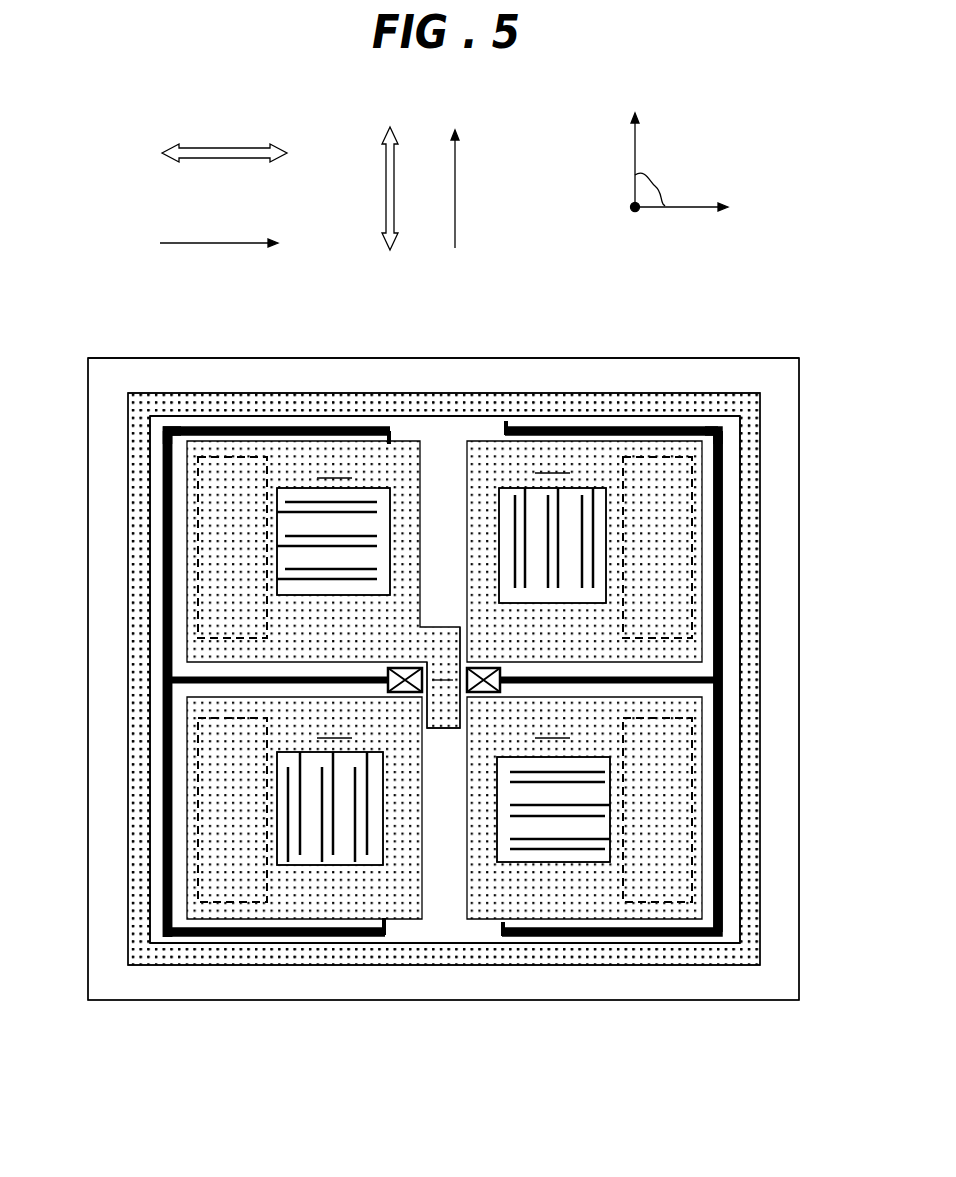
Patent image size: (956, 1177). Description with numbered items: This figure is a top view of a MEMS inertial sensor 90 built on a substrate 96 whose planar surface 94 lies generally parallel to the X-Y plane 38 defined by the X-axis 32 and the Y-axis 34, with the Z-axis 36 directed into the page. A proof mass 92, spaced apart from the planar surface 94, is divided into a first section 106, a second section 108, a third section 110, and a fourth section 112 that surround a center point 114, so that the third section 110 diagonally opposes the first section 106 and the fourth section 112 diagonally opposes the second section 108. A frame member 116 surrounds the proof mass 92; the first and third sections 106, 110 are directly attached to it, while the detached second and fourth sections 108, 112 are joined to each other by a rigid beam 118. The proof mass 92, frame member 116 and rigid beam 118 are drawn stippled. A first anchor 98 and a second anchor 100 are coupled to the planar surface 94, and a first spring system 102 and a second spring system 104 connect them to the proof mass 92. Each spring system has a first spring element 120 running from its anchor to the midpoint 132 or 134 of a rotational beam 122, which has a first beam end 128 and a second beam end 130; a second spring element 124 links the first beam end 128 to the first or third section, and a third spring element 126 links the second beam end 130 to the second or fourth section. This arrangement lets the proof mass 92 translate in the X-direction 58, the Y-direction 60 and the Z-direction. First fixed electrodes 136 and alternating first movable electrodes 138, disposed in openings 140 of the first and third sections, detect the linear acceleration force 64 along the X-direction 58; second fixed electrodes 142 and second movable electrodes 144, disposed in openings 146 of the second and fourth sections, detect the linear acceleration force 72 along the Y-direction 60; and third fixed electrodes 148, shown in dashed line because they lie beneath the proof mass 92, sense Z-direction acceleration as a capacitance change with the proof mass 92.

The X-axis 32 is at (683, 208).
The Y-axis 34 is at (635, 143).
The Z-axis 36 is at (635, 212).
The X-Y plane 38 is at (665, 206).
The X-direction 58 is at (205, 150).
The Y-direction 60 is at (393, 162).
The linear acceleration force 64 is at (200, 243).
The linear acceleration force 72 is at (458, 162).
The MEMS inertial sensor 90 is at (507, 1162).
The proof mass 92 is at (702, 393).
The planar surface 94 is at (789, 992).
The substrate 96 is at (162, 358).
The first anchor 98 is at (493, 662).
The second anchor 100 is at (395, 668).
The first spring system 102 is at (730, 423).
The second spring system 104 is at (157, 423).
The first section 106 is at (552, 525).
The second section 108 is at (553, 787).
The third section 110 is at (330, 789).
The fourth section 112 is at (333, 524).
The center point 114 is at (443, 682).
The frame member 116 is at (205, 393).
The rigid beam 118 is at (450, 715).
The first spring element 120 is at (277, 757).
The rotational beam 122 is at (163, 553).
The second spring element 124 is at (615, 427).
The third spring element 126 is at (277, 427).
The first beam end 128 is at (163, 925).
The second beam end 130 is at (157, 438).
The midpoint 132 is at (725, 680).
The midpoint 134 is at (200, 680).
The first fixed electrodes 136 is at (603, 500).
The first movable electrodes 138 is at (517, 525).
The openings 140 is at (500, 590).
The second fixed electrodes 142 is at (357, 512).
The second movable electrodes 144 is at (293, 537).
The openings 146 is at (390, 590).
The third fixed electrodes 148 is at (192, 493).